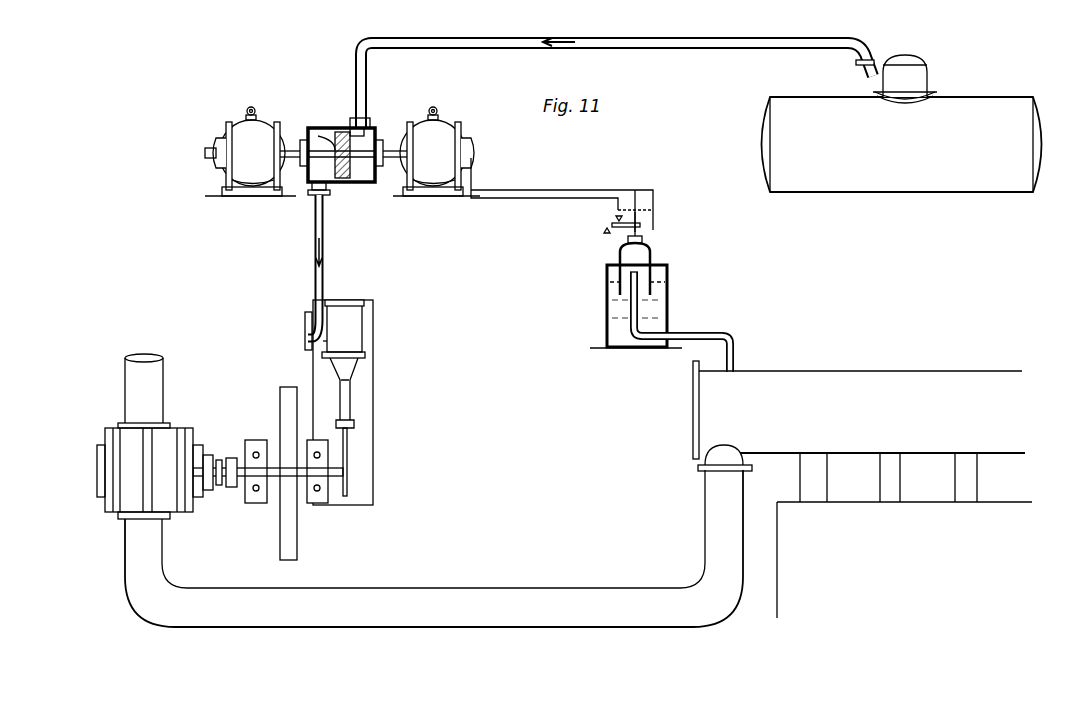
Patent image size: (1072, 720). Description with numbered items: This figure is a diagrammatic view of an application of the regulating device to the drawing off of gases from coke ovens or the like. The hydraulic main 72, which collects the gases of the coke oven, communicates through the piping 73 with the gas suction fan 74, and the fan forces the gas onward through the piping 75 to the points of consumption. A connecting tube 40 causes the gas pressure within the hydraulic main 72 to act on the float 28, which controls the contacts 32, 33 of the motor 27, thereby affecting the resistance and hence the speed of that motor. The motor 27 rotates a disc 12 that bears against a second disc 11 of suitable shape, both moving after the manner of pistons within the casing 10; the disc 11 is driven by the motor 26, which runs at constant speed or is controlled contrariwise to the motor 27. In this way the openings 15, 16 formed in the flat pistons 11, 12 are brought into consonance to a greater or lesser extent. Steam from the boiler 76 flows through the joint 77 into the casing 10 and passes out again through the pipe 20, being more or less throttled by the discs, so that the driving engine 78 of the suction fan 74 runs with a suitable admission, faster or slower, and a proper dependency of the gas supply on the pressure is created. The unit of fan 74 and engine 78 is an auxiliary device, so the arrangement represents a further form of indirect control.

The casing 10 is at (340, 164).
The second disc 11 is at (316, 183).
The disc 12 is at (346, 176).
The opening 15 is at (326, 140).
The opening 16 is at (347, 134).
The pipe 20 is at (313, 259).
The motor 26 is at (238, 128).
The motor 27 is at (440, 170).
The float 28 is at (632, 277).
The contact 32 is at (614, 217).
The contact 33 is at (604, 234).
The connecting tube 40 is at (718, 336).
The hydraulic main 72 is at (912, 385).
The piping 73 is at (436, 596).
The gas suction fan 74 is at (152, 475).
The piping 75 is at (160, 397).
The boiler 76 is at (793, 128).
The joint 77 is at (367, 85).
The driving engine 78 is at (348, 390).